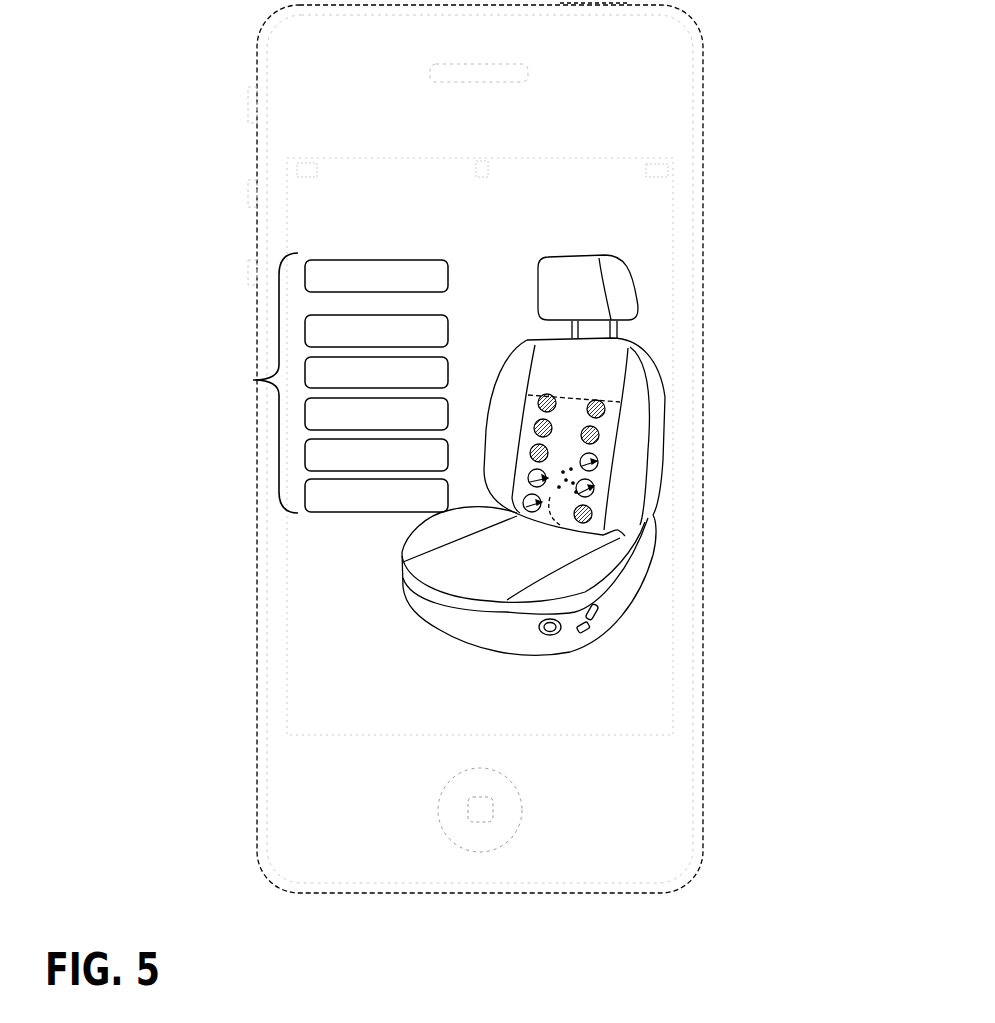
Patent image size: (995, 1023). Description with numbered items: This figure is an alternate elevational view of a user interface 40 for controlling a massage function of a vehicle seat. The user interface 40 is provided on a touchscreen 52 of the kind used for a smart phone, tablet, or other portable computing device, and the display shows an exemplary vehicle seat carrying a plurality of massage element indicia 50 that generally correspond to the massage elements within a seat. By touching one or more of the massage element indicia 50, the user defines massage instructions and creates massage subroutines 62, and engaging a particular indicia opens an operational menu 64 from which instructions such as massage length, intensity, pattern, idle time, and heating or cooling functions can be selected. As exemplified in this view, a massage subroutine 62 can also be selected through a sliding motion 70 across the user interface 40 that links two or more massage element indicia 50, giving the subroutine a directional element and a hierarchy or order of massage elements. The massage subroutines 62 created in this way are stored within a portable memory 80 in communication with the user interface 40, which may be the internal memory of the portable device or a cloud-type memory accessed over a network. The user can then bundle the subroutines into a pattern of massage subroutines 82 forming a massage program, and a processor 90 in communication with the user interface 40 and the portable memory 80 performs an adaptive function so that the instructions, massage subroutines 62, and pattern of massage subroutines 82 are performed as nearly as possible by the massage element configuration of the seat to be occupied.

The user interface 40 is at (338, 558).
The massage element indicia 50 is at (600, 395).
The touchscreen 52 is at (637, 215).
The massage subroutine 62 is at (612, 467).
The operational menu 64 is at (253, 380).
The sliding motion 70 is at (560, 525).
The portable memory 80 is at (353, 673).
The pattern of massage subroutines 82 is at (523, 522).
The processor 90 is at (330, 220).